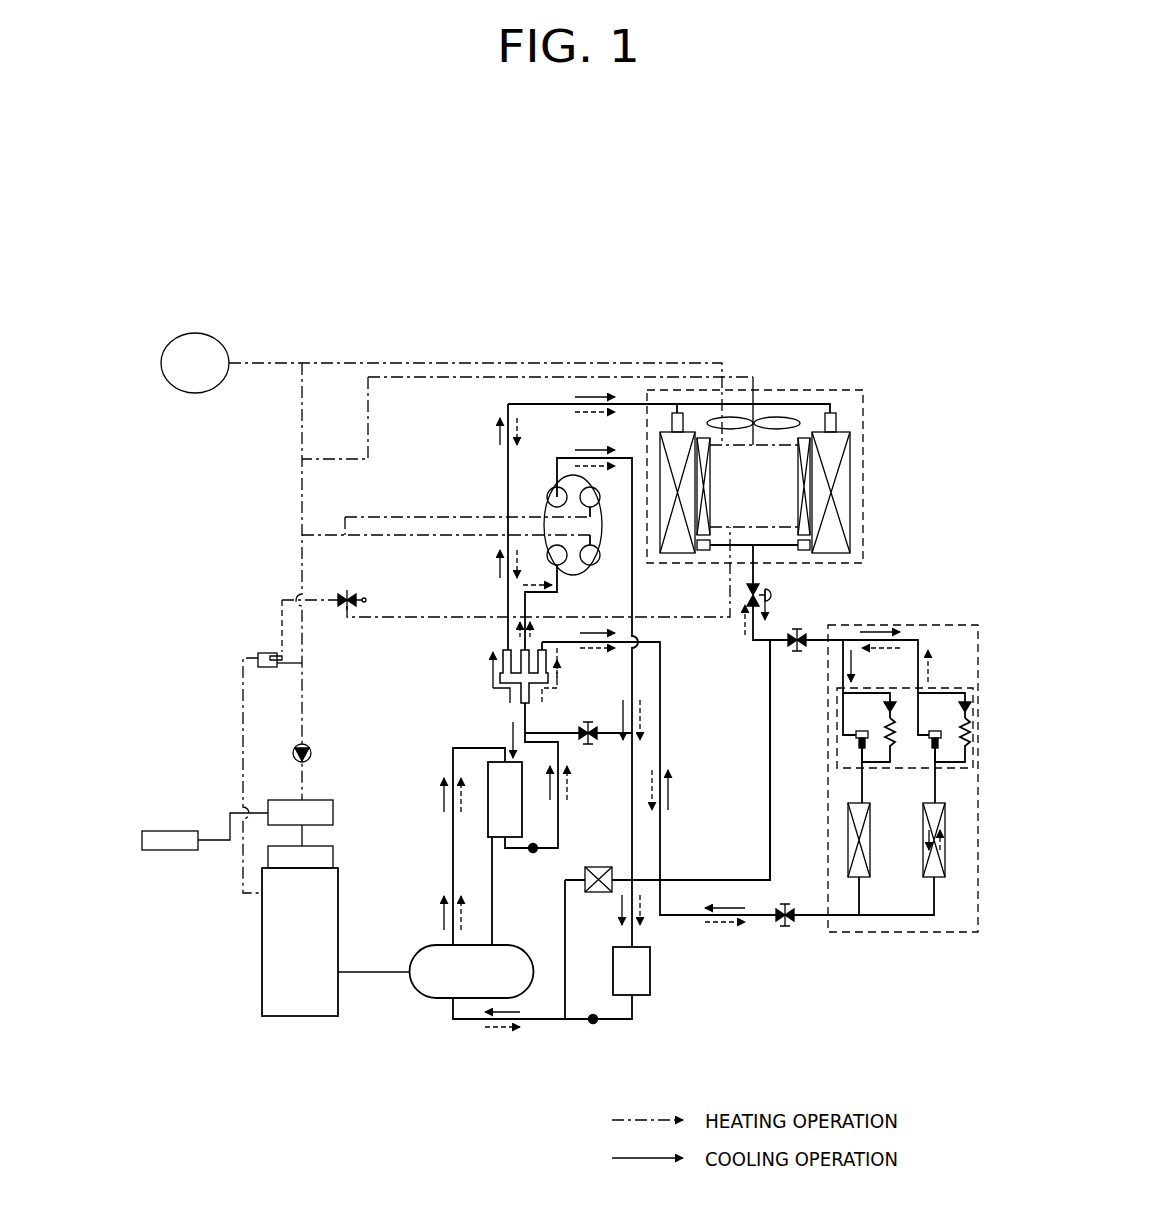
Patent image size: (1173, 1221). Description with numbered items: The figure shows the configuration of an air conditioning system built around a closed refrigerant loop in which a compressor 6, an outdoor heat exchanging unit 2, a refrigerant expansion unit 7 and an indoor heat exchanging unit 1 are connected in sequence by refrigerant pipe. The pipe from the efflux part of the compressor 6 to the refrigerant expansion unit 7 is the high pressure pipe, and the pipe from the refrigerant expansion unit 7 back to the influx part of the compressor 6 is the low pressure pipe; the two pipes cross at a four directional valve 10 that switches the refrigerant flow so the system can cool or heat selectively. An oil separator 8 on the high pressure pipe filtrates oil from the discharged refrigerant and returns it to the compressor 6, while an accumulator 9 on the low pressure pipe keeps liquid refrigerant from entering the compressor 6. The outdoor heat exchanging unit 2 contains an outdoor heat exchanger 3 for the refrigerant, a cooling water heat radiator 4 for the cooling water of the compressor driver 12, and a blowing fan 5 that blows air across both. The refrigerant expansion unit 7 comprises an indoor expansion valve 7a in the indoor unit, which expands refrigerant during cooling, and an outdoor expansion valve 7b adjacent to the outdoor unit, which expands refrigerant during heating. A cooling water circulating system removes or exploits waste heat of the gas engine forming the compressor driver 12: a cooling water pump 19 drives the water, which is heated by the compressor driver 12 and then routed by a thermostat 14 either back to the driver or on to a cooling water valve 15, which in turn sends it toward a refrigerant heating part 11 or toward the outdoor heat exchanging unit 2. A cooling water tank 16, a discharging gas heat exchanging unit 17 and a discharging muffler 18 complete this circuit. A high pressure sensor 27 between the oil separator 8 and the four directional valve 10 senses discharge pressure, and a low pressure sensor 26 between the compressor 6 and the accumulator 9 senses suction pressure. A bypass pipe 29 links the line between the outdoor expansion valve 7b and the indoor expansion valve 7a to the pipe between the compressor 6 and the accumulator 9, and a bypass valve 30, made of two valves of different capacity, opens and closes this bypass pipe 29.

The indoor heat exchanging unit 1 is at (903, 932).
The outdoor heat exchanging unit 2 is at (863, 390).
The outdoor heat exchanger 3 is at (677, 440).
The cooling water heat radiator 4 is at (805, 458).
The blowing fan 5 is at (778, 430).
The compressor 6 is at (440, 998).
The refrigerant expansion unit 7 is at (832, 676).
The indoor expansion valve 7a is at (830, 712).
The outdoor expansion valve 7b is at (749, 592).
The oil separator 8 is at (497, 762).
The accumulator 9 is at (650, 972).
The four directional valve 10 is at (549, 684).
The refrigerant heating part 11 is at (548, 497).
The compressor driver 12 is at (299, 1016).
The thermostat 14 is at (268, 672).
The cooling water valve 15 is at (347, 610).
The cooling water tank 16 is at (193, 333).
The discharging gas heat exchanging unit 17 is at (333, 815).
The discharging muffler 18 is at (169, 850).
The cooling water pump 19 is at (312, 753).
The low pressure sensor 26 is at (593, 1025).
The high pressure sensor 27 is at (533, 853).
The bypass pipe 29 is at (716, 878).
The bypass valve 30 is at (598, 893).